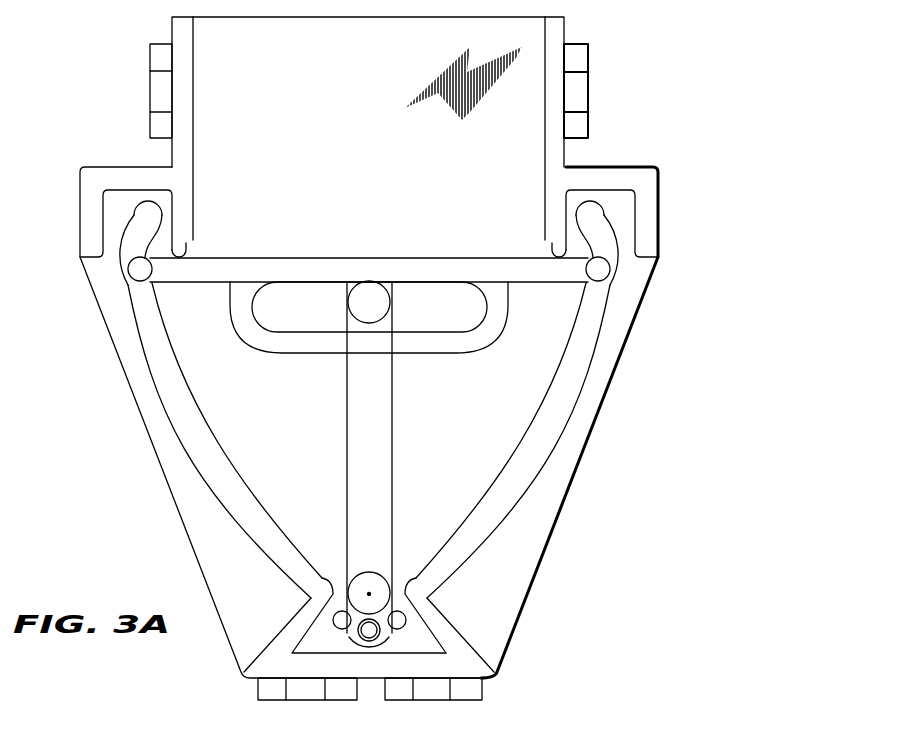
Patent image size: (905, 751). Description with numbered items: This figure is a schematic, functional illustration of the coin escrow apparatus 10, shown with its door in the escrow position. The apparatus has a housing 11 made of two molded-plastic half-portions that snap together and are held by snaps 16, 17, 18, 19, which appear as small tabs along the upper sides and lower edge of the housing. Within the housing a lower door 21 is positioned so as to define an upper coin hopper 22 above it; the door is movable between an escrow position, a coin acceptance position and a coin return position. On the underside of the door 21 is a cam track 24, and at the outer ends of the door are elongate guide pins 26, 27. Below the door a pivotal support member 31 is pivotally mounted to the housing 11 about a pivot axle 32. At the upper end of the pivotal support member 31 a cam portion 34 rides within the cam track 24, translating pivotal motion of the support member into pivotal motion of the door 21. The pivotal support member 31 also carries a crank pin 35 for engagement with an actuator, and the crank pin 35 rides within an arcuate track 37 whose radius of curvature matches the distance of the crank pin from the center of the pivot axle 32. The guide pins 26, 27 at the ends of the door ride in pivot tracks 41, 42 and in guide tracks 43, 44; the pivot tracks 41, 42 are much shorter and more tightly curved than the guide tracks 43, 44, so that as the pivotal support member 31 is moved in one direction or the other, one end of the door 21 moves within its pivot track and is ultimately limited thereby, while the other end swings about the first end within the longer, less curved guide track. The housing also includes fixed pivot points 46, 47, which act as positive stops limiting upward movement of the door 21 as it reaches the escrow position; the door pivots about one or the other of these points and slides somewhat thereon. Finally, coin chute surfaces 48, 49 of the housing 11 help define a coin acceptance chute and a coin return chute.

The escrow apparatus 10 is at (746, 110).
The housing 11 is at (408, 432).
The snap 16 is at (582, 60).
The snap 17 is at (582, 93).
The snap 18 is at (165, 60).
The snap 19 is at (486, 693).
The lower door 21 is at (303, 262).
The upper coin hopper 22 is at (370, 163).
The cam track 24 is at (447, 345).
The guide pin 26 is at (139, 272).
The guide pin 27 is at (600, 272).
The pivotal support member 31 is at (386, 462).
The pivot axle 32 is at (372, 590).
The cam portion 34 is at (380, 303).
The crank pin 35 is at (372, 628).
The arcuate track 37 is at (341, 612).
The pivot track 41 is at (137, 214).
The pivot track 42 is at (601, 214).
The guide track 43 is at (189, 412).
The guide track 44 is at (552, 414).
The fixed pivot point 46 is at (190, 248).
The fixed pivot point 47 is at (556, 250).
The coin chute surface 48 is at (266, 638).
The coin chute surface 49 is at (474, 638).